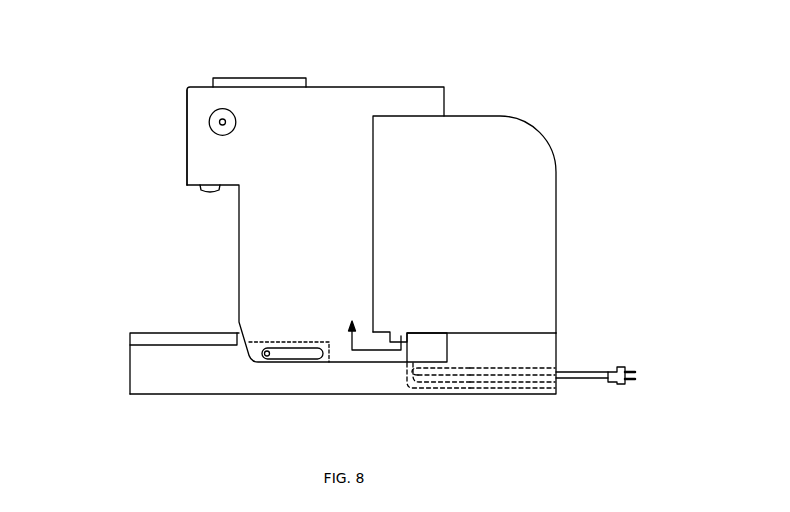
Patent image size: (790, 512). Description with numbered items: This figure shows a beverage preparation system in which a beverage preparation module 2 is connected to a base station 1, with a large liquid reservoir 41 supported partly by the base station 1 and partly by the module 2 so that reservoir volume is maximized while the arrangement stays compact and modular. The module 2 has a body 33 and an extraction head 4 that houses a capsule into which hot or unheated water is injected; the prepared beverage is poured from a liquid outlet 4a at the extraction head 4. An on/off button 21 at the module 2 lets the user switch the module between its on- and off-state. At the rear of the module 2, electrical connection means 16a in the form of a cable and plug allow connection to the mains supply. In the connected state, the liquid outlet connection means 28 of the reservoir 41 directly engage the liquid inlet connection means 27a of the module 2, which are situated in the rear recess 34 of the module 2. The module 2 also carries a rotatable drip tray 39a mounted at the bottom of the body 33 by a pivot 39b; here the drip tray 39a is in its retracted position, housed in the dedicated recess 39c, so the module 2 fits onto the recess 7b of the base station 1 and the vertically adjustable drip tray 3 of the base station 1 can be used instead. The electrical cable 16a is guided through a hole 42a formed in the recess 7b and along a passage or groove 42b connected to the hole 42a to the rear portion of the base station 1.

The base station 1 is at (537, 390).
The beverage preparation module 2 is at (384, 86).
The drip tray 3 is at (137, 368).
The extraction head 4 is at (197, 152).
The liquid outlet 4a is at (209, 193).
The recess 7b is at (318, 363).
The electrical connection means 16a is at (595, 381).
The on/off button 21 is at (224, 108).
The liquid inlet connection means 27a is at (401, 336).
The liquid outlet connection means 28 is at (401, 336).
The body 33 is at (296, 231).
The rear recess 34 is at (421, 116).
The drip tray 39a is at (305, 359).
The pivot 39b is at (265, 358).
The recess 39c is at (290, 341).
The large liquid reservoir 41 is at (553, 212).
The hole 42a is at (413, 390).
The passage or groove 42b is at (473, 385).